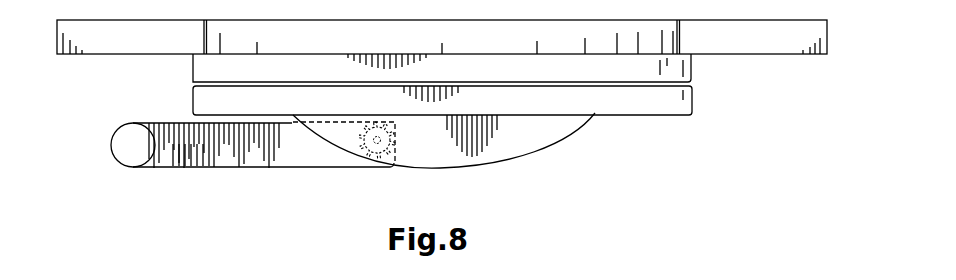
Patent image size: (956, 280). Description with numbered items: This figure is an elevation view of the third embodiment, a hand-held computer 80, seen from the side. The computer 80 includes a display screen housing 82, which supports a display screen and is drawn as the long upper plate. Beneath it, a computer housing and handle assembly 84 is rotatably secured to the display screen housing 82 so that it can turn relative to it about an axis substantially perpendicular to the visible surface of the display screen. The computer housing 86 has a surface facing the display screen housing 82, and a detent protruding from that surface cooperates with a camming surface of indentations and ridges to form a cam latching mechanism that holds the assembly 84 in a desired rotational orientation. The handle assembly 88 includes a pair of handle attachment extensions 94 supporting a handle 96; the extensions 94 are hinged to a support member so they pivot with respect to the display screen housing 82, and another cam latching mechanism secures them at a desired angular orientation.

The hand-held computer 80 is at (153, 90).
The display screen housing 82 is at (755, 38).
The computer housing and handle assembly 84 is at (617, 137).
The computer housing 86 is at (203, 104).
The handle assembly 88 is at (510, 137).
The handle attachment extensions 94 is at (277, 145).
The handle 96 is at (125, 150).